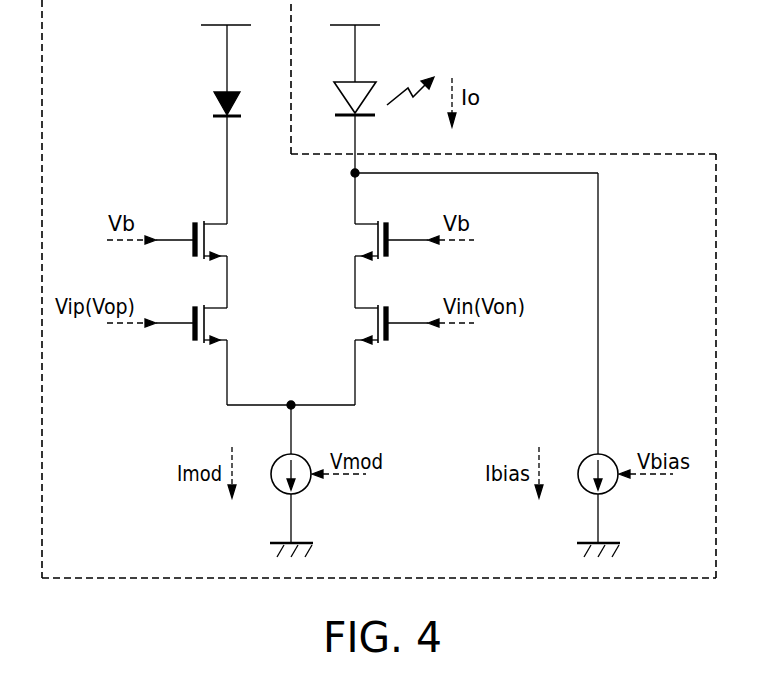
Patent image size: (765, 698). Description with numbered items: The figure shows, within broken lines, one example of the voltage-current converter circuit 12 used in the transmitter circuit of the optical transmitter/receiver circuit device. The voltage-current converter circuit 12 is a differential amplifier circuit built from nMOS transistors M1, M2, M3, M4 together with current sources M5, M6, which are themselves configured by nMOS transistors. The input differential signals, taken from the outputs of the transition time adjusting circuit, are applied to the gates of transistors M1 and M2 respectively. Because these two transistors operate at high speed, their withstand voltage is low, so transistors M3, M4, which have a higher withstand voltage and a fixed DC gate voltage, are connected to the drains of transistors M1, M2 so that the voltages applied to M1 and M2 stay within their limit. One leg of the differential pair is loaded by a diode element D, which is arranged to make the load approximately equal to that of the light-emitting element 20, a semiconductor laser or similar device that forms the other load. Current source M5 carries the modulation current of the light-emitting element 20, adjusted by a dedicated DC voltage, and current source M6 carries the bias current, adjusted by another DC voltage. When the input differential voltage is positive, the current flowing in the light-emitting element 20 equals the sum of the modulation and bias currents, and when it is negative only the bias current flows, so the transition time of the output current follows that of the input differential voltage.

The voltage-current converter circuit 12 is at (583, 153).
The light-emitting element 20 is at (363, 80).
The diode element D is at (219, 124).
The nMOS transistor M1 is at (191, 337).
The nMOS transistor M2 is at (391, 337).
The nMOS transistor M3 is at (191, 254).
The nMOS transistor M4 is at (391, 254).
The current source M5 is at (280, 466).
The current source M6 is at (587, 466).